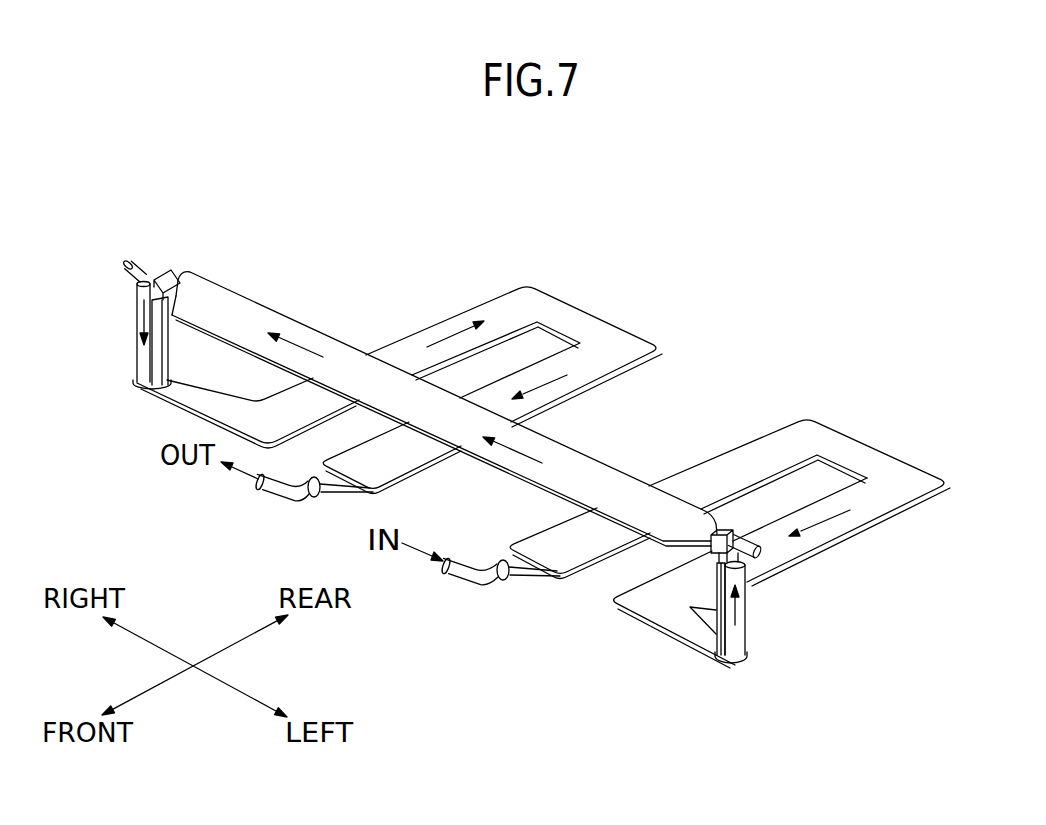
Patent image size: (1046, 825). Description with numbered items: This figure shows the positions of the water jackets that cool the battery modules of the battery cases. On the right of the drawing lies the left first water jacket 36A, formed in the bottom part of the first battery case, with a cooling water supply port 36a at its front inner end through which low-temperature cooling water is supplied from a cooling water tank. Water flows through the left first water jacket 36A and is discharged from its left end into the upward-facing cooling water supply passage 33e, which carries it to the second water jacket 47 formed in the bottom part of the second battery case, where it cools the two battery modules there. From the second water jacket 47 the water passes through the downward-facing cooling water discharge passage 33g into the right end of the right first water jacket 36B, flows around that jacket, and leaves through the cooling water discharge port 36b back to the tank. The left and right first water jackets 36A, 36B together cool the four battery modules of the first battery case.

The second water jacket 47 is at (320, 330).
The left first water jacket 36A is at (901, 450).
The right first water jacket 36B is at (615, 315).
The cooling water supply port 36a is at (465, 582).
The cooling water discharge port 36b is at (283, 492).
The cooling water supply passage 33e is at (741, 603).
The cooling water discharge passage 33g is at (148, 337).